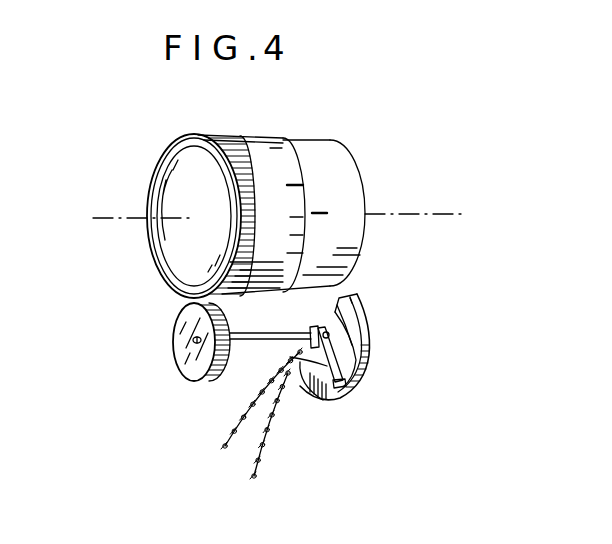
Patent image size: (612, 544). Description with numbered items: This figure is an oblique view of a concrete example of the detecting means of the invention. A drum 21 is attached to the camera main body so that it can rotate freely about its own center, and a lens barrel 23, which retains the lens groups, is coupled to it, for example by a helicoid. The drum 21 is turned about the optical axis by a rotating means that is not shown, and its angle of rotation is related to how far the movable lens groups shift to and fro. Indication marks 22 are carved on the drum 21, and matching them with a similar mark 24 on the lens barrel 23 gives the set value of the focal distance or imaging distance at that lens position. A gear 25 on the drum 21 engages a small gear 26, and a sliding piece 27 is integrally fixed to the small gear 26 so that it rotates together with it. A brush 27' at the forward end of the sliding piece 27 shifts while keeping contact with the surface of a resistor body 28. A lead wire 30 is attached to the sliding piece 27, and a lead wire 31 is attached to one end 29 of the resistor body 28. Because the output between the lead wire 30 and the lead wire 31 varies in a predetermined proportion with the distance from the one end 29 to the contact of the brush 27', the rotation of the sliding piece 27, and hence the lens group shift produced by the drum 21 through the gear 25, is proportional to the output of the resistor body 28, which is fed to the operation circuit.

The drum 21 is at (245, 150).
The indication marks 22 is at (294, 184).
The lens barrel 23 is at (320, 155).
The mark 24 is at (322, 211).
The gear 25 is at (220, 136).
The small gear 26 is at (187, 368).
The sliding piece 27 is at (335, 372).
The brush 27' is at (384, 364).
The resistor body 28 is at (348, 313).
The one end of the resistor body 29 is at (302, 372).
The lead wire 30 is at (223, 447).
The lead wire 31 is at (253, 477).